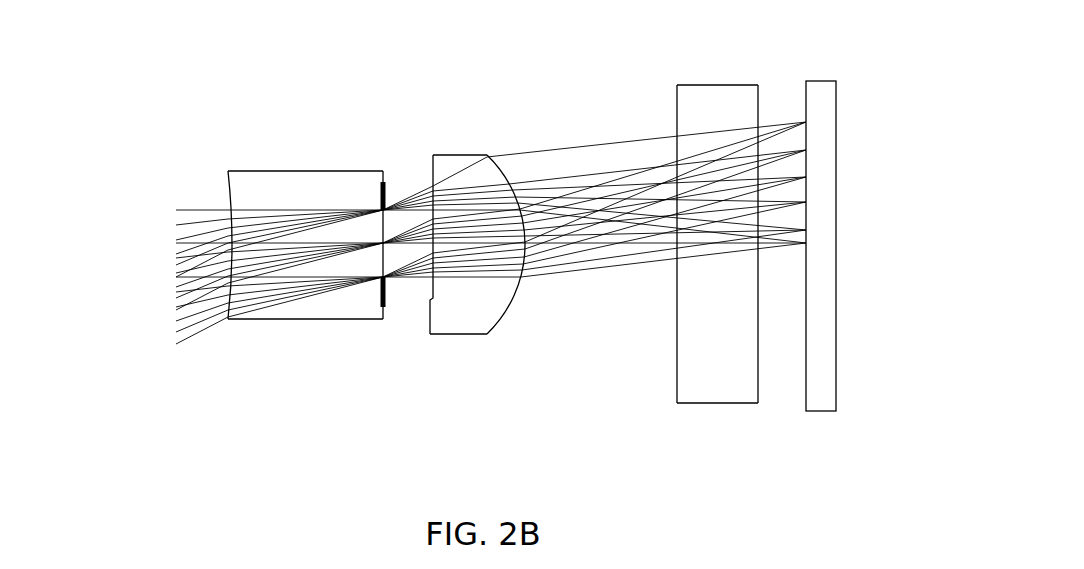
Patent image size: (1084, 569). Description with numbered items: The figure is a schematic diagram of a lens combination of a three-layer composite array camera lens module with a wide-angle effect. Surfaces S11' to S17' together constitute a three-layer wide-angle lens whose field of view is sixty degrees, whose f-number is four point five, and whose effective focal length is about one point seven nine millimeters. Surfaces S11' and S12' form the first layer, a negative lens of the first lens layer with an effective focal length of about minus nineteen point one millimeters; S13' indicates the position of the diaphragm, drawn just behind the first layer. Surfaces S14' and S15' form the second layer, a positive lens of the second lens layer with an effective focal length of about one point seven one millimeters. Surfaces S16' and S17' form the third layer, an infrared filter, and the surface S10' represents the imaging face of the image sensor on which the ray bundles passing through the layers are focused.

The imaging face of the image sensor S10' is at (846, 246).
The first surface of the first layer S11' is at (215, 216).
The second surface of the first layer S12' is at (365, 218).
The diaphragm S13' is at (402, 186).
The first surface of the second layer S14' is at (421, 225).
The second surface of the second layer S15' is at (499, 219).
The first surface of the infrared filter S16' is at (663, 226).
The second surface of the infrared filter S17' is at (773, 226).